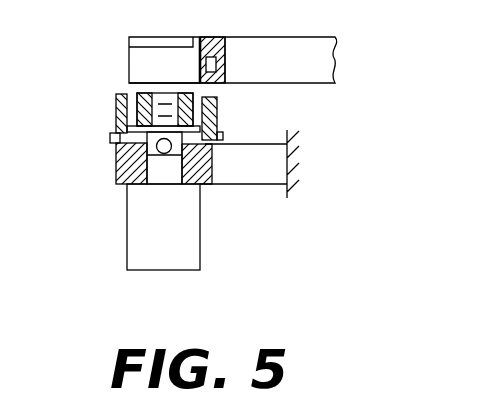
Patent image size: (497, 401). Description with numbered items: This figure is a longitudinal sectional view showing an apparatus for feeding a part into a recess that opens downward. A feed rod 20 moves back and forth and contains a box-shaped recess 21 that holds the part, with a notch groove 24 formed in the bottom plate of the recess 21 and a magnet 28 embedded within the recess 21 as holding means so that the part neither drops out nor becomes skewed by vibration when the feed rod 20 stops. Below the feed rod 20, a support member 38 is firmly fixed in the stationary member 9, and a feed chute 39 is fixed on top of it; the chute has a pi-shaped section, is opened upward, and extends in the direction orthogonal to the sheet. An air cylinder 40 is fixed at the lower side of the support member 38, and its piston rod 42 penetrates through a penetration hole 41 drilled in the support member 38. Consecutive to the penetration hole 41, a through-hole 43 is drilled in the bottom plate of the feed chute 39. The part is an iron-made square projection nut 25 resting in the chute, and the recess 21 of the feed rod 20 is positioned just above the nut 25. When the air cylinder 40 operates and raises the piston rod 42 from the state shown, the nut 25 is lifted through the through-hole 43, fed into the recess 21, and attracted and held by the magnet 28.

The feed rod 20 is at (314, 84).
The notch groove 24 is at (142, 53).
The recess 21 is at (142, 68).
The magnet 28 is at (218, 62).
The feed chute 39 is at (218, 113).
The projection nut 25 is at (125, 112).
The through-hole 43 is at (112, 137).
The piston rod 42 is at (117, 167).
The penetration hole 41 is at (180, 186).
The stationary member 9 is at (281, 172).
The support member 38 is at (244, 186).
The air cylinder 40 is at (127, 238).